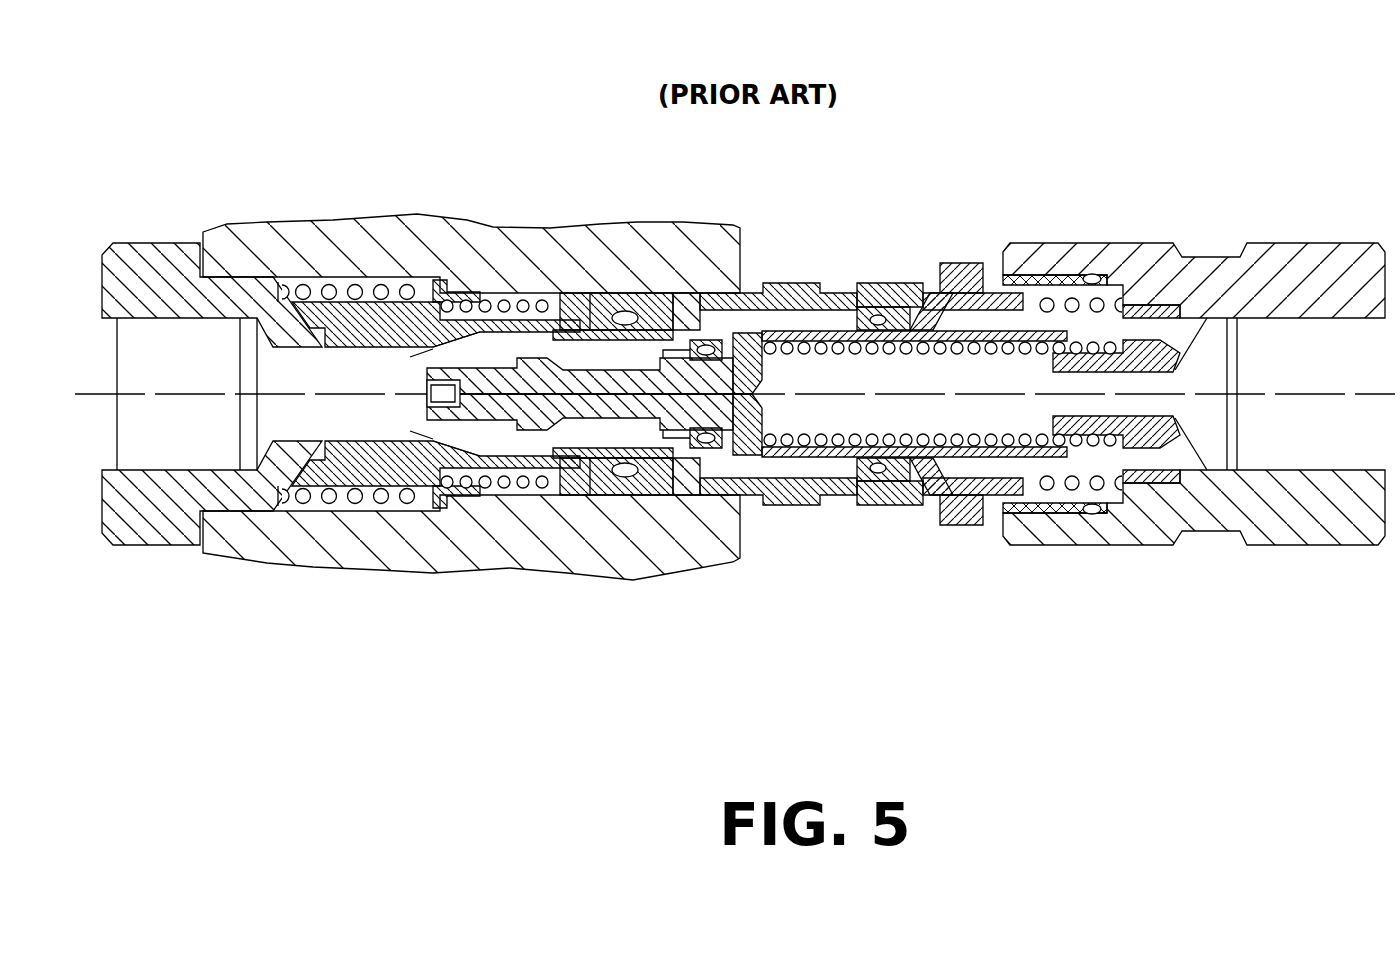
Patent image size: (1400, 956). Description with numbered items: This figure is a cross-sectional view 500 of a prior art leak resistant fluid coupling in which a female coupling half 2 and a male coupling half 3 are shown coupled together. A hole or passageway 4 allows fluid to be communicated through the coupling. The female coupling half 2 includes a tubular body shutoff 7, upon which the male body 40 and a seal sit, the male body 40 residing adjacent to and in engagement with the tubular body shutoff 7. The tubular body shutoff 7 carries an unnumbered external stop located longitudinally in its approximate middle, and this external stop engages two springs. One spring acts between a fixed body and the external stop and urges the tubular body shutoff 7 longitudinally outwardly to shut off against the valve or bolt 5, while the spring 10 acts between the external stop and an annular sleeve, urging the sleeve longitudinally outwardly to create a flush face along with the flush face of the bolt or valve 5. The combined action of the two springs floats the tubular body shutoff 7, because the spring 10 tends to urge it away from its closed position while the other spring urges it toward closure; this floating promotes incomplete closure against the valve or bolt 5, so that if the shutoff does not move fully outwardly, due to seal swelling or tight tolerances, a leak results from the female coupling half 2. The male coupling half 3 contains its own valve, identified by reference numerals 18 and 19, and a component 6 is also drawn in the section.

The cross-sectional view 500 is at (162, 116).
The female coupling half 2 is at (383, 255).
The male coupling half 3 is at (963, 263).
The hole or passageway 4 is at (137, 340).
The valve or bolt 5 is at (641, 380).
The valve head 6 is at (690, 347).
The tubular body shutoff 7 is at (567, 293).
The spring 10 is at (503, 300).
The valve 18 is at (853, 505).
The valve 19 is at (853, 293).
The male body 40 is at (827, 293).